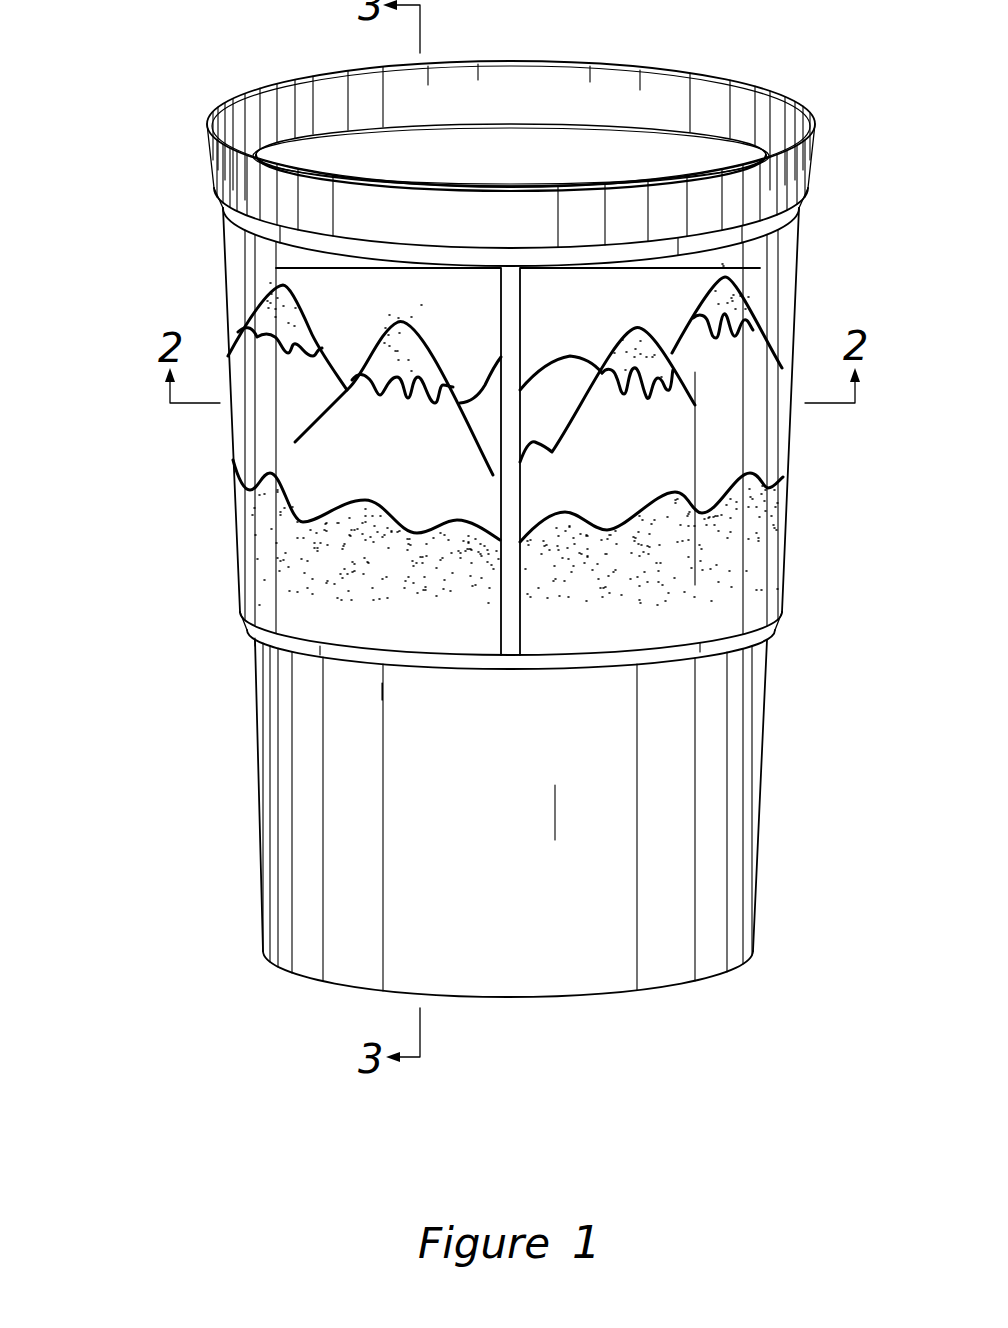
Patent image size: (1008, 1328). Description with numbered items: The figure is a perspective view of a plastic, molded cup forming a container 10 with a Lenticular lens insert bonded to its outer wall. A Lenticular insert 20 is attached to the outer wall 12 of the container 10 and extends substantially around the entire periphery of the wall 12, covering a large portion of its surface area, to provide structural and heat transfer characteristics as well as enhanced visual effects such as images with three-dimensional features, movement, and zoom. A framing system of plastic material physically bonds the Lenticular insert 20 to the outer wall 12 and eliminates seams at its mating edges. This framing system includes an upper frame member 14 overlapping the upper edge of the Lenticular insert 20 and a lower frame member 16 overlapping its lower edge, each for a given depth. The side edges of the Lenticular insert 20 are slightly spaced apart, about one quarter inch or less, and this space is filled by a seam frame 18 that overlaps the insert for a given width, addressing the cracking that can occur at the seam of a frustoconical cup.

The container 10 is at (483, 525).
The outer wall 12 is at (793, 175).
The upper frame member 14 is at (795, 230).
The lower frame member 16 is at (780, 625).
The seam frame 18 is at (508, 582).
The Lenticular insert 20 is at (790, 491).